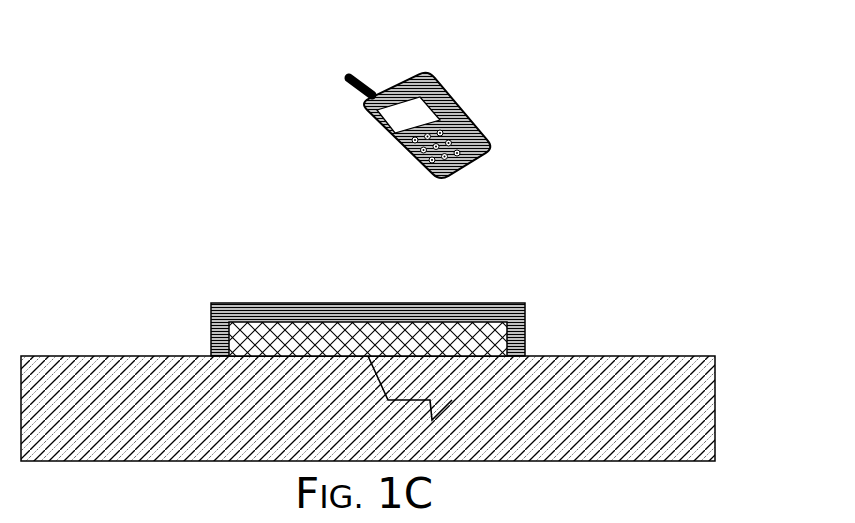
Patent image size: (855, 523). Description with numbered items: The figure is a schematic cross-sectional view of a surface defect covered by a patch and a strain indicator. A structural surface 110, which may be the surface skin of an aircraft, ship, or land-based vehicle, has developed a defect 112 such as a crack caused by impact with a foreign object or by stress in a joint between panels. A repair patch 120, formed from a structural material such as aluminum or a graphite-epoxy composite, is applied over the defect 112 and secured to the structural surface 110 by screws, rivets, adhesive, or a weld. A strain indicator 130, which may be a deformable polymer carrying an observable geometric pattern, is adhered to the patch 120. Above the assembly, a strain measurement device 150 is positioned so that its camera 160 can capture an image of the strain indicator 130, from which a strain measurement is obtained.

The structural surface 110 is at (197, 356).
The defect 112 is at (443, 410).
The repair patch 120 is at (313, 322).
The strain indicator 130 is at (455, 303).
The strain measurement device 150 is at (467, 104).
The camera 160 is at (392, 98).